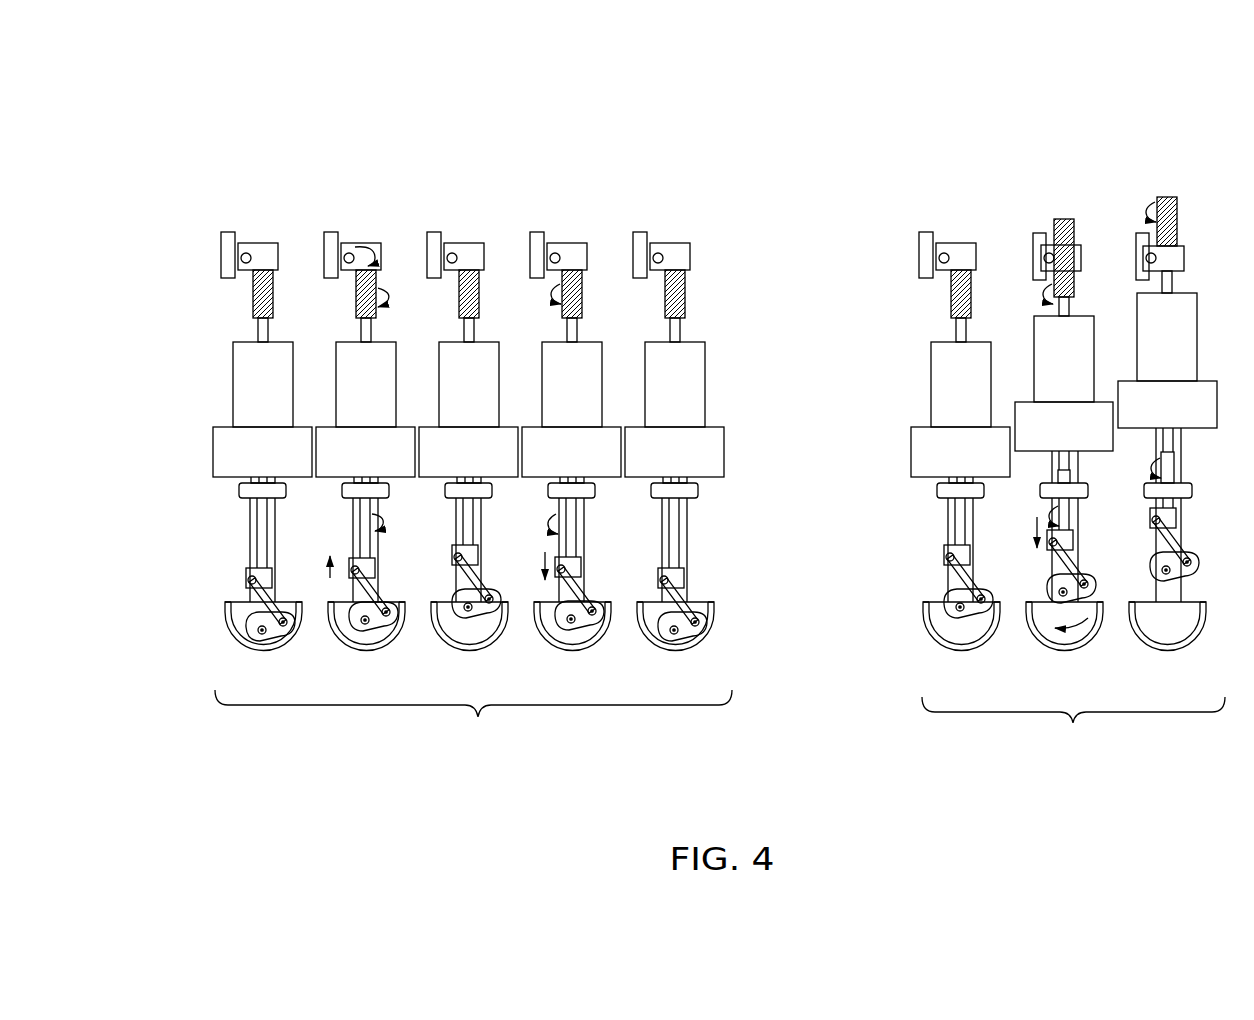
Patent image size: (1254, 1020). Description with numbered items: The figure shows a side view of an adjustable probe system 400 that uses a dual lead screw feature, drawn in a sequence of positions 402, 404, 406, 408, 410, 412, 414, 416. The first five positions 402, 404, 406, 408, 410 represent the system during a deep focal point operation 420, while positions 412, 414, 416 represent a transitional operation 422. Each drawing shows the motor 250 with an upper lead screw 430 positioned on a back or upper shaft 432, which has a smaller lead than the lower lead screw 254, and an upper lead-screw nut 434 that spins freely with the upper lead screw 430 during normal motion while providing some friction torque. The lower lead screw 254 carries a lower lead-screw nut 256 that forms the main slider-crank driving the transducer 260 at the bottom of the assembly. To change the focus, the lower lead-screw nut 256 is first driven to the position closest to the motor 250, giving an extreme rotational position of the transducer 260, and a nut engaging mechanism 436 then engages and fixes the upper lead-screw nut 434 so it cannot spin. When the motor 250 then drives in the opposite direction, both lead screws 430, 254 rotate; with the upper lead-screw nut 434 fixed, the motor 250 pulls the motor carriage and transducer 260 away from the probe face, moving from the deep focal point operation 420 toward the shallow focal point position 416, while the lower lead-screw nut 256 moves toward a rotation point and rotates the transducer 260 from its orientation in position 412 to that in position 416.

The adjustable probe system 400 is at (222, 118).
The position 402 is at (265, 220).
The position 404 is at (368, 220).
The position 406 is at (466, 220).
The position 408 is at (569, 220).
The position 410 is at (671, 220).
The position 412 is at (960, 222).
The position 414 is at (1062, 200).
The position 416 is at (1167, 198).
The deep focal point operation 420 is at (473, 747).
The transitional operation 422 is at (1073, 754).
The motor 250 is at (233, 385).
The lead screw 254 is at (255, 532).
The lower lead-screw nut 256 is at (245, 574).
The transducer 260 is at (233, 638).
The upper lead screw 430 is at (253, 289).
The upper shaft 432 is at (257, 332).
The upper lead-screw nut 434 is at (278, 250).
The nut engaging mechanism 436 is at (220, 240).